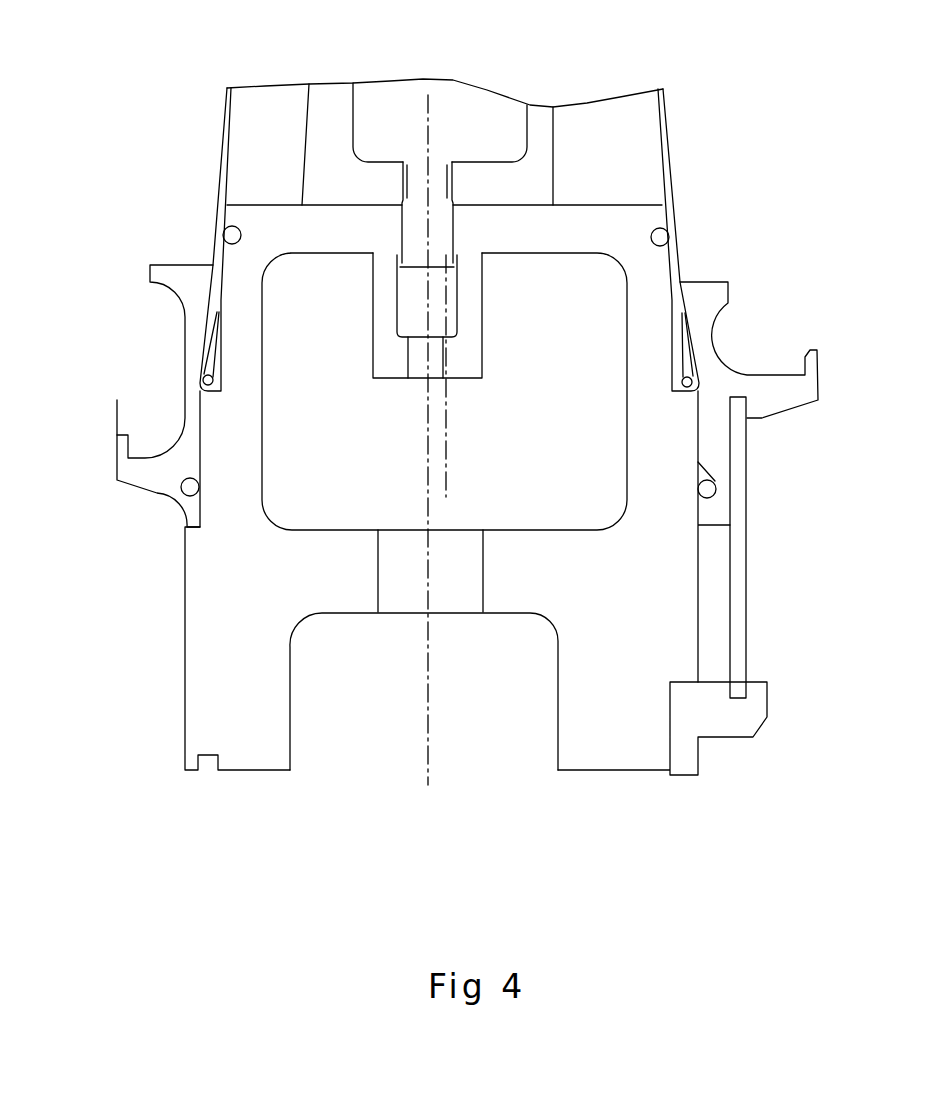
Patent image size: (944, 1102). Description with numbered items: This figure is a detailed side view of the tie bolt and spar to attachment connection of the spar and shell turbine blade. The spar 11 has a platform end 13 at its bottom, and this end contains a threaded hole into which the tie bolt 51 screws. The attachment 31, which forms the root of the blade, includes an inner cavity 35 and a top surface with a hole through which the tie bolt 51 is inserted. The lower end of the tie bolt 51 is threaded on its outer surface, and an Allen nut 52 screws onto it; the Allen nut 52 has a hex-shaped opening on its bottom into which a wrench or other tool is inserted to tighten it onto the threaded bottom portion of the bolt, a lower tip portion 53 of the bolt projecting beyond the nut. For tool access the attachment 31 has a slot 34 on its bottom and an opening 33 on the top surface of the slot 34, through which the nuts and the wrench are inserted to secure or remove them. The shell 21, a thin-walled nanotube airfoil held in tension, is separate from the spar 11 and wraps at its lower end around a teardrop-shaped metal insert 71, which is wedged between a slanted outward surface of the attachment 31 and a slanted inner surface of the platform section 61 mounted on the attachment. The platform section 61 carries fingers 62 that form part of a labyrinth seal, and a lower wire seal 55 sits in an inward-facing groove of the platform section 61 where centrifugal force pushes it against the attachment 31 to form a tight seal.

The spar 11 is at (601, 102).
The platform end 13 is at (543, 110).
The shell 21 is at (368, 211).
The attachment 31 is at (522, 514).
The opening 33 is at (501, 692).
The slot 34 is at (424, 747).
The inner cavity 35 is at (719, 540).
The tie bolt 51 is at (631, 286).
The Allen nut 52 is at (616, 315).
The bolt tip 53 is at (634, 418).
The lower wire seal 55 is at (376, 370).
The platform section 61 is at (448, 309).
The fingers 62 is at (118, 454).
The metal insert 71 is at (365, 318).